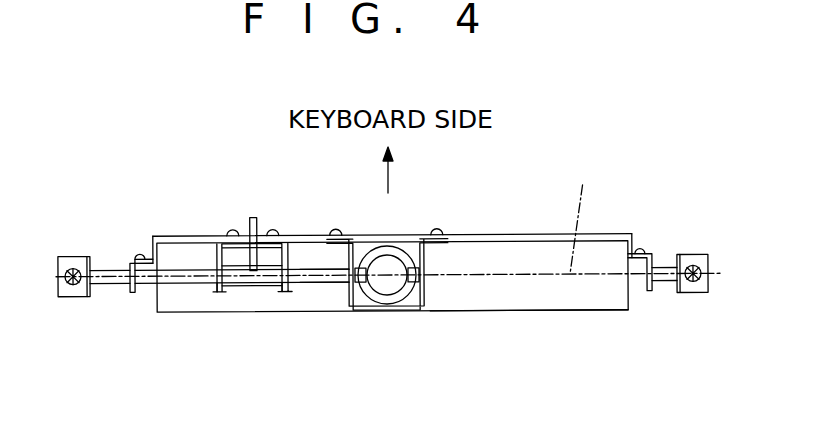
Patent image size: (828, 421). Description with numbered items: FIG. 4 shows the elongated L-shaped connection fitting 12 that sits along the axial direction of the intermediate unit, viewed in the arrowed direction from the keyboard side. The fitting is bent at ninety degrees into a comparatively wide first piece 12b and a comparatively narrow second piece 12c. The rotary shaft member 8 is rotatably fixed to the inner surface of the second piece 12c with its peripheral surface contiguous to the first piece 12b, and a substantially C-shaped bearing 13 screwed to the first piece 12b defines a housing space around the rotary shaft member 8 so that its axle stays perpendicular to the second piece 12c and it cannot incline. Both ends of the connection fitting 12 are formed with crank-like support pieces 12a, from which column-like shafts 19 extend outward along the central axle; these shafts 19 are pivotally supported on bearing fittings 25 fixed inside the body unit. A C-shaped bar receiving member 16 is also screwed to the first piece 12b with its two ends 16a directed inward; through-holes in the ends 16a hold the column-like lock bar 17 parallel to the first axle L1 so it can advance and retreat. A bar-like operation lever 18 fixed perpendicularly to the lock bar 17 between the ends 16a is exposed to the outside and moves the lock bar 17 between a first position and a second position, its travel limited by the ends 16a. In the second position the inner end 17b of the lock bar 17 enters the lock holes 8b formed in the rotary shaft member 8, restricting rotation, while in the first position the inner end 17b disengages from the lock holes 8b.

The rotary shaft member 8 is at (357, 310).
The lock holes 8b is at (350, 280).
The connection fitting 12 is at (512, 258).
The support pieces 12a is at (137, 292).
The first piece 12b is at (465, 235).
The second piece 12c is at (535, 305).
The bearing 13 is at (433, 310).
The bar receiving member 16 is at (248, 244).
The ends of the bar receiving member 16a is at (283, 291).
The lock bar 17 is at (240, 290).
The inner end of the lock bar 17b is at (338, 272).
The operation lever 18 is at (255, 217).
The shafts 19 is at (108, 285).
The bearing fittings 25 is at (72, 255).
The first axle L1 is at (586, 217).